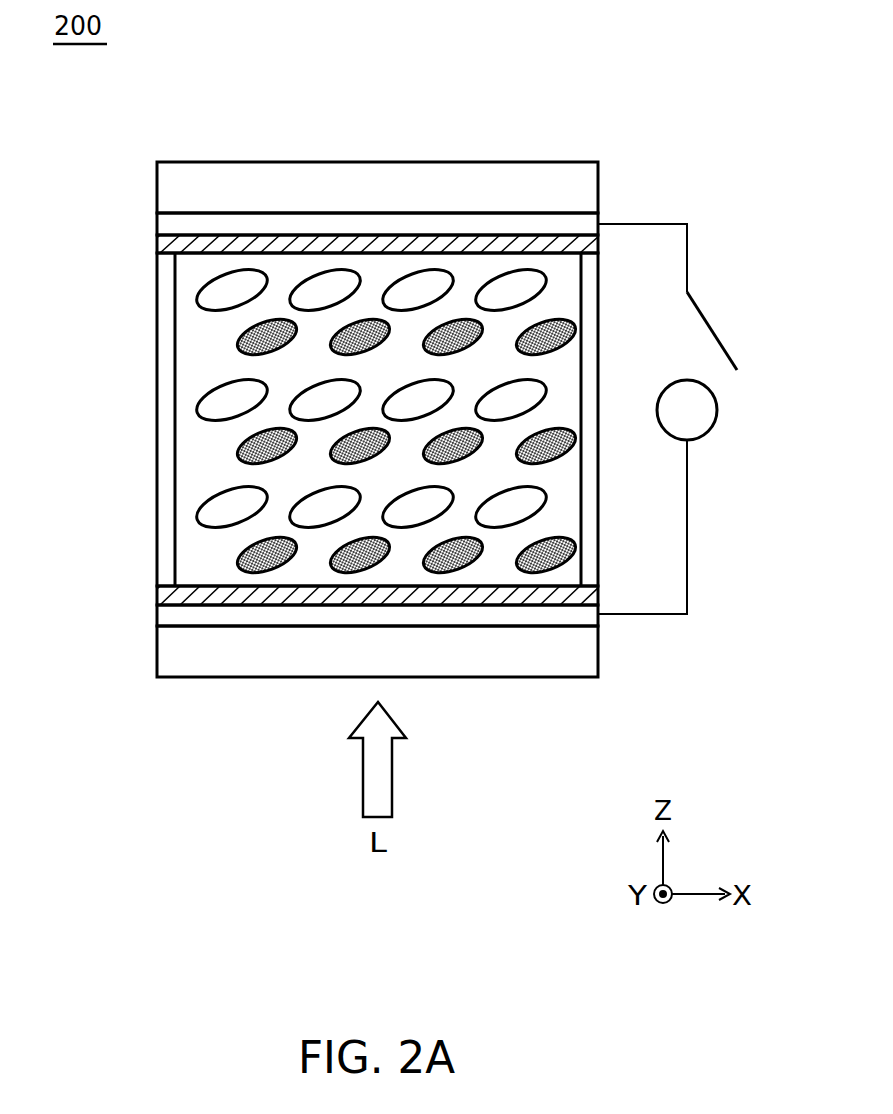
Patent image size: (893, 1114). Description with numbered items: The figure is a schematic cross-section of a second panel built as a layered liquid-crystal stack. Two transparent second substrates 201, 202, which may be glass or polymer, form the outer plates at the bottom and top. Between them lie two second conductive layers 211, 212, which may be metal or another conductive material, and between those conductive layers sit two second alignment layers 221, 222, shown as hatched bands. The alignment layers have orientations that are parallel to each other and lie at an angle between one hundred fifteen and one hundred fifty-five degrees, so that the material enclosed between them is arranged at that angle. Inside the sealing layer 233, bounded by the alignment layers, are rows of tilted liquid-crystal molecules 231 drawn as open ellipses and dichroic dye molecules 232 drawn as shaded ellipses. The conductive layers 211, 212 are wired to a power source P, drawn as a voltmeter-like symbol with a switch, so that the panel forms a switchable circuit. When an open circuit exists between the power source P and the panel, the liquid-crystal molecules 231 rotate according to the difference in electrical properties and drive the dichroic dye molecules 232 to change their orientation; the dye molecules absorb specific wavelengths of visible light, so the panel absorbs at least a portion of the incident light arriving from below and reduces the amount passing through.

The second substrate 201 is at (160, 653).
The second substrate 202 is at (160, 192).
The second conductive layer 211 is at (160, 616).
The second conductive layer 212 is at (160, 226).
The second alignment layer 221 is at (163, 596).
The second alignment layer 222 is at (163, 242).
The liquid-crystal molecules 231 is at (222, 503).
The dichroic dye molecules 232 is at (243, 553).
The sealing layer 233 is at (160, 424).
The power source P is at (718, 409).